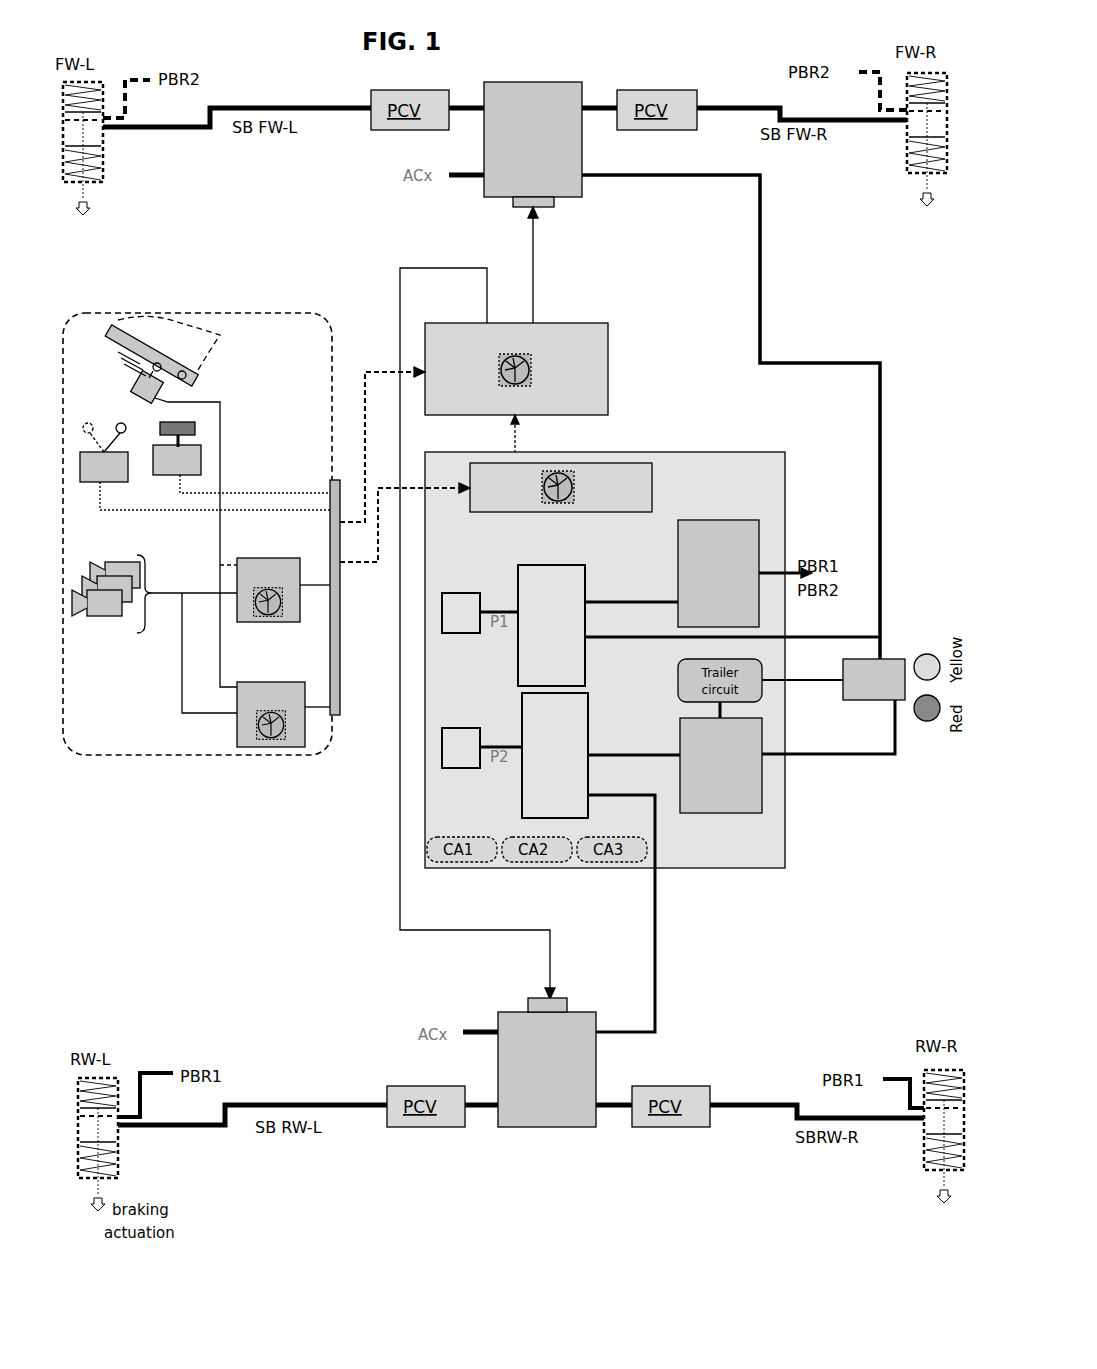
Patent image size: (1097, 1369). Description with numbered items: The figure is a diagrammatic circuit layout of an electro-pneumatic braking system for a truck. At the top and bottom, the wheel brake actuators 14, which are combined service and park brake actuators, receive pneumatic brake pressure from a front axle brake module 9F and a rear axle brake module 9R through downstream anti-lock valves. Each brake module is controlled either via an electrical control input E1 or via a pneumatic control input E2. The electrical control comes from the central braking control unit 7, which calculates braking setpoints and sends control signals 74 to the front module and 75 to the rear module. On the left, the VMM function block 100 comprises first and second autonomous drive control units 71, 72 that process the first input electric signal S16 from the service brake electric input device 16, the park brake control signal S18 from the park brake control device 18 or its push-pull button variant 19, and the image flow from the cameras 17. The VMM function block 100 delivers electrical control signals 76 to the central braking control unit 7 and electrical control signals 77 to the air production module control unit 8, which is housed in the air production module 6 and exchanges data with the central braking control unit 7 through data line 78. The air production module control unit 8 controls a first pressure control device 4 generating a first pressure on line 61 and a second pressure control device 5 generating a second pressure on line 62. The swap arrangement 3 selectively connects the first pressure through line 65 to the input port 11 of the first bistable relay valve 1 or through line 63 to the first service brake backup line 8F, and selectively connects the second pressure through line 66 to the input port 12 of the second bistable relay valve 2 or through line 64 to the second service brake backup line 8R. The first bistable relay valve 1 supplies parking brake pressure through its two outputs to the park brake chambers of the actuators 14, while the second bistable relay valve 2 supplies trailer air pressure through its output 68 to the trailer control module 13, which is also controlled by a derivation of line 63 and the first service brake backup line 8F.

The first bistable relay valve 1 is at (727, 520).
The second bistable relay valve 2 is at (710, 813).
The swap arrangement 3 is at (555, 565).
The first pressure control device 4 is at (458, 593).
The second pressure control device 5 is at (455, 728).
The air production module 6 is at (762, 455).
The central braking control unit 7 is at (588, 323).
The air production module control unit 8 is at (621, 461).
The input port 11 is at (678, 600).
The input port 12 is at (680, 752).
The trailer control module 13 is at (893, 656).
The brake actuator 14 is at (113, 186).
The service brake electric input device 16 is at (182, 501).
The camera 17 is at (105, 618).
The park brake control device 18 is at (196, 469).
The push-pull button 19 is at (153, 450).
The line carrying first pressure P1 61 is at (499, 602).
The line carrying second pressure P2 62 is at (501, 737).
The line 63 is at (648, 639).
The line 64 is at (640, 795).
The line 65 is at (648, 604).
The line 66 is at (640, 755).
The output of second bistable relay valve 68 is at (830, 763).
The first autonomous drive control unit 71 is at (277, 569).
The second autonomous drive control unit 72 is at (277, 694).
The electrical control signal to front brake module 74 is at (536, 250).
The electrical control signal to rear brake module 75 is at (407, 268).
The electrical control signals 76 is at (370, 372).
The electrical control signals 77 is at (374, 565).
The data line 78 is at (526, 439).
The VMM function block 100 is at (271, 311).
The first service brake backup line 8F is at (758, 245).
The second service brake backup line 8R is at (657, 932).
The front axle brake module 9F is at (580, 83).
The rear axle brake module 9R is at (497, 1010).
The electrical control input E1 is at (528, 212).
The pneumatic control input E2 is at (585, 185).
The first input electric signal S16 is at (220, 432).
The park brake control signal S18 is at (100, 500).